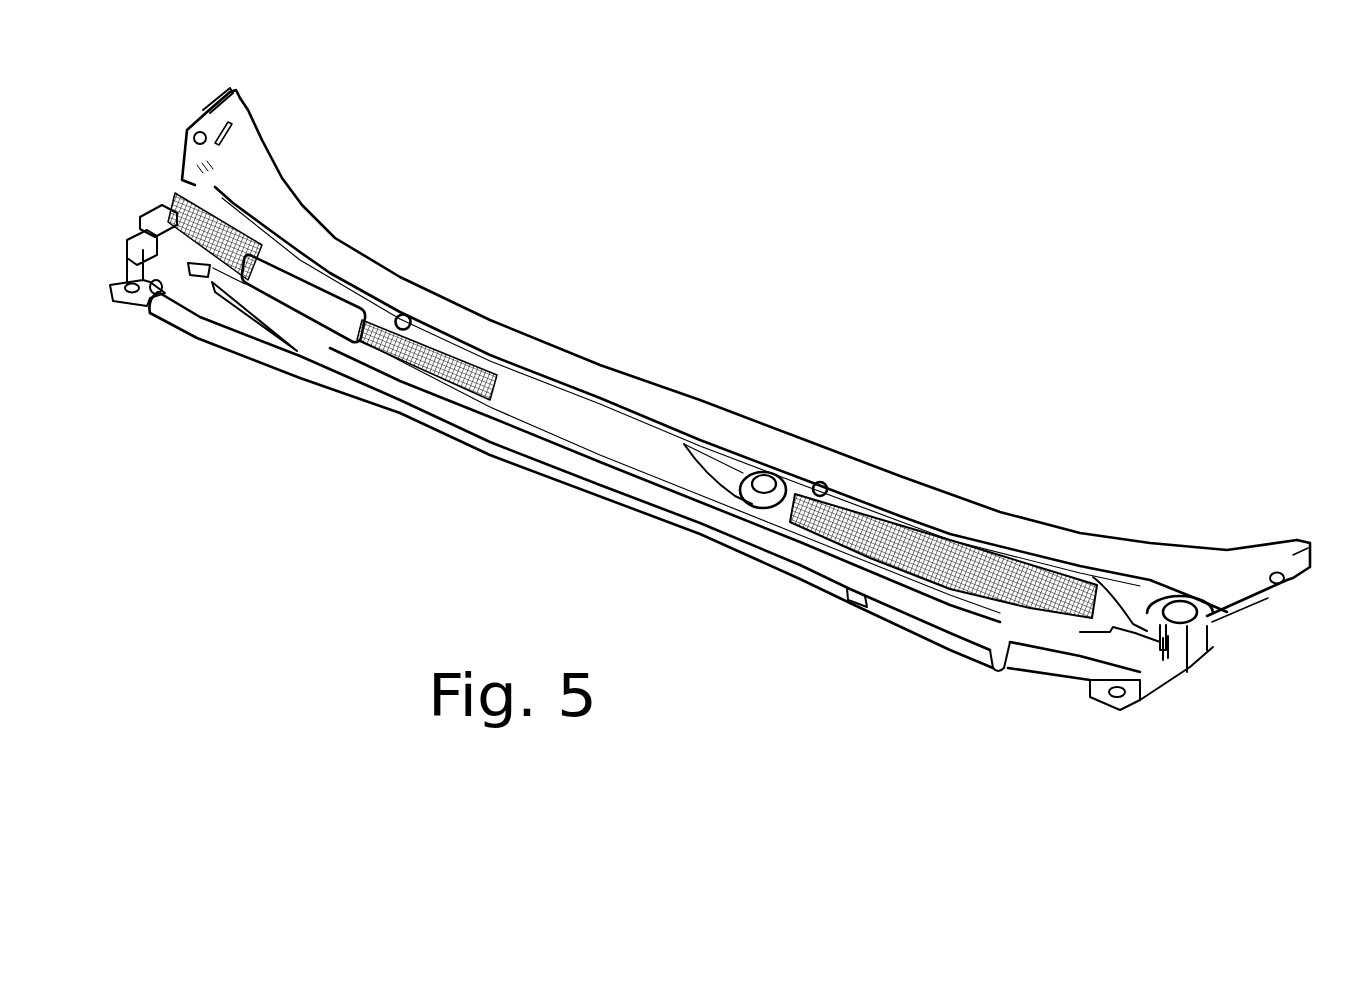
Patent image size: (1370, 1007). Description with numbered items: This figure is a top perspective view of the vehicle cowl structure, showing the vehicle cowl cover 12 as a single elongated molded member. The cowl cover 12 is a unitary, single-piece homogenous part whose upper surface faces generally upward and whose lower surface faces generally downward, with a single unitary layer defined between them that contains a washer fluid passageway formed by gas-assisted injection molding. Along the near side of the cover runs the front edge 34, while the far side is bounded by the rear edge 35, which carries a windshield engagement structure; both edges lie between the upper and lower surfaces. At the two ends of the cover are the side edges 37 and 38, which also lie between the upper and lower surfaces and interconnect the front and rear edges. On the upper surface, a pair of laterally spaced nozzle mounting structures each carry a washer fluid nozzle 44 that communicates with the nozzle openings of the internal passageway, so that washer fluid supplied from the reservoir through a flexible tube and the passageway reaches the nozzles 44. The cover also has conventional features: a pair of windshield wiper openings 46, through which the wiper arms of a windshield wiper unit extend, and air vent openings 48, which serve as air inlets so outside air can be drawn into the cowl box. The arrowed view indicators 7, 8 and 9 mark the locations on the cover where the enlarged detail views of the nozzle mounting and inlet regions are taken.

The vehicle cowl cover 12 is at (862, 407).
The front edge 34 is at (760, 565).
The rear edge 35 is at (963, 503).
The side edge 37 is at (1287, 595).
The side edge 38 is at (186, 137).
The washer fluid nozzle 44 is at (410, 318).
The windshield wiper opening 46 is at (758, 474).
The air vent opening 48 is at (470, 373).
The section line 7- 7 is at (690, 323).
The section line 8- 8 is at (477, 213).
The section line 9- 9 is at (330, 177).